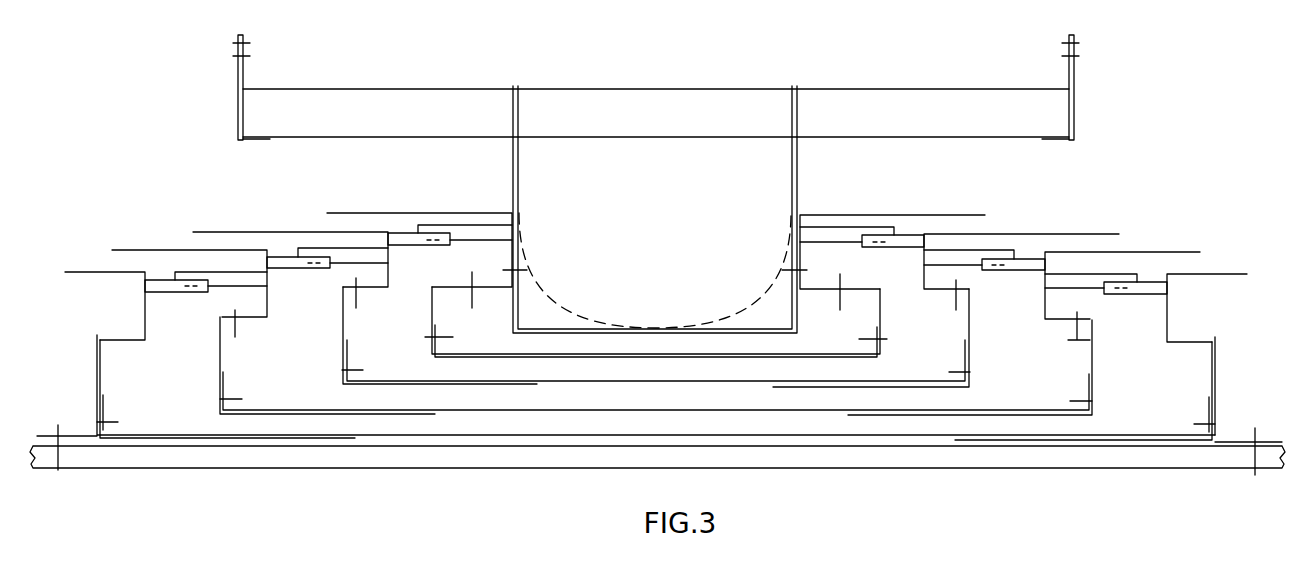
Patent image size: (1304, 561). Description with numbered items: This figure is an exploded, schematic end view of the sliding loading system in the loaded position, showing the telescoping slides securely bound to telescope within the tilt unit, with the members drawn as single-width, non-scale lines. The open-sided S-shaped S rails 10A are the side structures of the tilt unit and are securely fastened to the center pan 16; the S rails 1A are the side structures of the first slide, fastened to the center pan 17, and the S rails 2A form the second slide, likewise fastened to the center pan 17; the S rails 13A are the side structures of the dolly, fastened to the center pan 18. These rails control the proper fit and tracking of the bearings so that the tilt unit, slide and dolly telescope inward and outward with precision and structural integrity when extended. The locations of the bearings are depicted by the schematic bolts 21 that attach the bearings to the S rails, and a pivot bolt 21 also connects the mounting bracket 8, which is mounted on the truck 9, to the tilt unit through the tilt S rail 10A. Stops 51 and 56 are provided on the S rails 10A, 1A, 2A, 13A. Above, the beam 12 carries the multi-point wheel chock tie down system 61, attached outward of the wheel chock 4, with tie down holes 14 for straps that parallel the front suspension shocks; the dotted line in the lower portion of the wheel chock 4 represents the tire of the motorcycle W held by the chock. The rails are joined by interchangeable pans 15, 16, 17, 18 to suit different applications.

The beam 12 is at (638, 121).
The multi-point wheel chock tie down system 61 is at (238, 107).
The tie down holes 14 is at (238, 50).
The wheel chock 4 is at (793, 103).
The motorcycle W is at (643, 225).
The S rails of tilt unit 10A is at (83, 272).
The S rails of slide 1A is at (163, 250).
The S rails of slide 2A is at (243, 232).
The S rails of dolly 13A is at (375, 213).
The stop 56 is at (225, 288).
The stop 51 is at (167, 293).
The center pan 18 is at (617, 354).
The center pan 17 is at (632, 382).
The center pan 16 is at (677, 413).
The pan 15 is at (637, 435).
The mounting bracket 8 is at (1217, 370).
The truck 9 is at (442, 460).
The bolt 21 is at (788, 273).